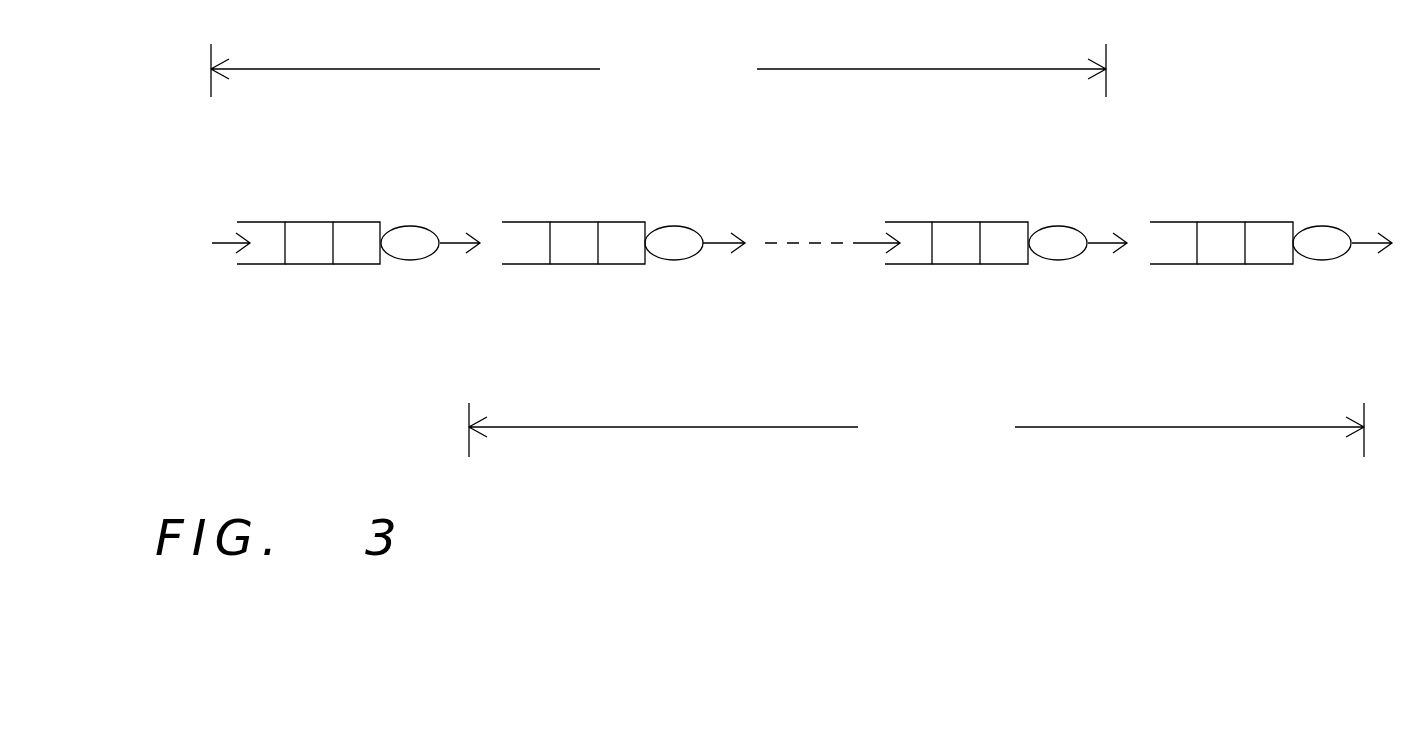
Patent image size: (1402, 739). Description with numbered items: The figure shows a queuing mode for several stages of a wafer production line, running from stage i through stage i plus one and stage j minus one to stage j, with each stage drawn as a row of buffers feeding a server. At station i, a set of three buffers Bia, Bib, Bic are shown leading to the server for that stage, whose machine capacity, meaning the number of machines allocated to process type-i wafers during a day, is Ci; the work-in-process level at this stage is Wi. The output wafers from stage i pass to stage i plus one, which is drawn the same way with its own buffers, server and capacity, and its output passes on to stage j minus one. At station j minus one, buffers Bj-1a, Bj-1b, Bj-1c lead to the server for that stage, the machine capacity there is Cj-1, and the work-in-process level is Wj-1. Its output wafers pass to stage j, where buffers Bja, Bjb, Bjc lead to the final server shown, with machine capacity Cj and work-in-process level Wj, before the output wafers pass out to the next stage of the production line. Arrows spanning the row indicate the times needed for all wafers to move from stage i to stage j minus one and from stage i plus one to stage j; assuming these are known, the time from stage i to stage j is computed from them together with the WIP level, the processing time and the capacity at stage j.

The WIP level at stage i Wi is at (313, 182).
The WIP level at stage j-1 Wj-1 is at (963, 184).
The WIP level at stage j Wj is at (1228, 184).
The machine capacity at stage i Ci is at (430, 222).
The machine capacity at stage j-1 Cj-1 is at (1078, 222).
The machine capacity at stage j Cj is at (1342, 222).
The buffer at station i Bia is at (268, 250).
The buffer at station i Bib is at (318, 250).
The buffer at station i Bic is at (365, 250).
The buffer at station j-1 Bj-1a is at (918, 250).
The buffer at station j-1 Bj-1b is at (963, 250).
The buffer at station j-1 Bj-1c is at (1017, 250).
The buffer at station j Bja is at (1183, 250).
The buffer at station j Bjb is at (1230, 250).
The buffer at station j Bjc is at (1277, 250).